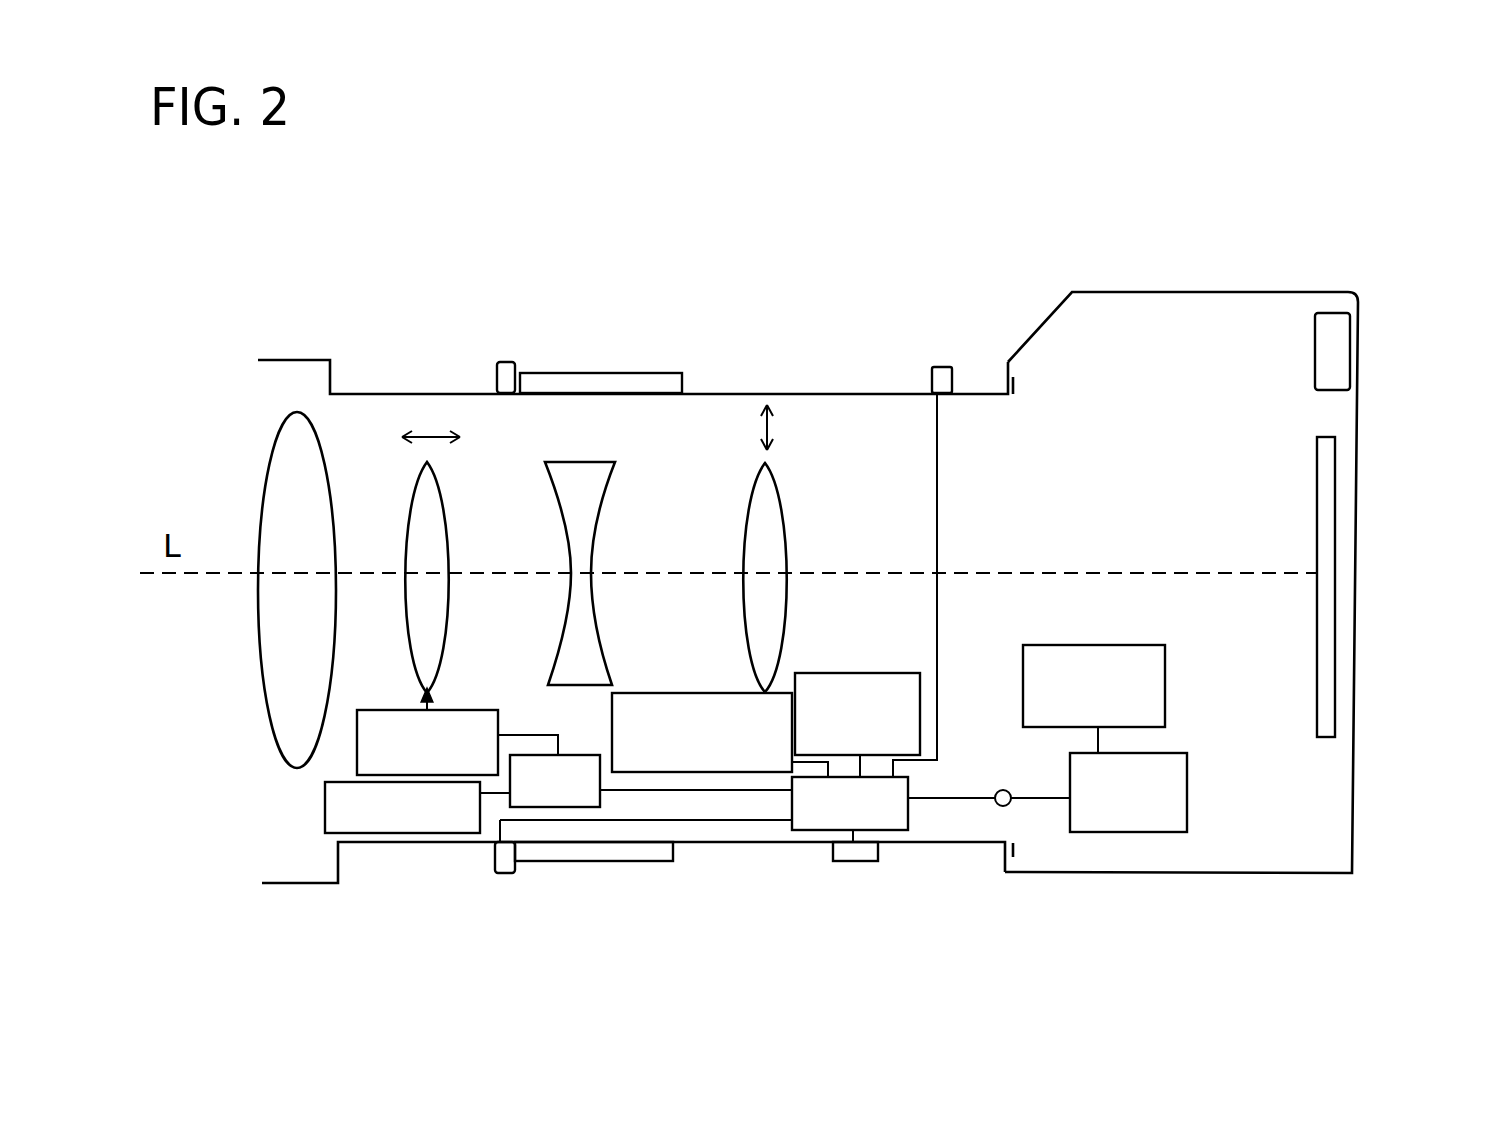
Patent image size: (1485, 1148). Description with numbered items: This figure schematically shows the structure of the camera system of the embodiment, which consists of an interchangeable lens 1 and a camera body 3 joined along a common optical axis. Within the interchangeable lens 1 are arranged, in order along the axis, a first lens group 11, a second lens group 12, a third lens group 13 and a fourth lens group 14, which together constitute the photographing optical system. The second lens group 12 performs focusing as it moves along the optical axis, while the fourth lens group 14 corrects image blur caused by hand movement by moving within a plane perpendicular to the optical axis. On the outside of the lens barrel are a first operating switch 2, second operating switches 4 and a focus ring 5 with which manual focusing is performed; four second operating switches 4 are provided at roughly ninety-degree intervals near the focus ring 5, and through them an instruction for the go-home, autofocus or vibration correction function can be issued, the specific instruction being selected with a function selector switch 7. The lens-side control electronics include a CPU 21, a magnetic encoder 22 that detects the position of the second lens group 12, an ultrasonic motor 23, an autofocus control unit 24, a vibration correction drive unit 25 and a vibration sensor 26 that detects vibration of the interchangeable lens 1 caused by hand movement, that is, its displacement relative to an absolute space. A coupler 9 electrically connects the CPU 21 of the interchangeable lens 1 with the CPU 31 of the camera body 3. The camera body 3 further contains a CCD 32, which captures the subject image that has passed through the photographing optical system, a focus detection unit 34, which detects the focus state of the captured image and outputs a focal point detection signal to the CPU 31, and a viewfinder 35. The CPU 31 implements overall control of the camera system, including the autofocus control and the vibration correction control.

The interchangeable lens 1 is at (363, 388).
The first operating switch 2 is at (943, 372).
The camera body 3 is at (1140, 283).
The second operating switch 4 is at (506, 378).
The focus ring 5 is at (608, 378).
The function selector switch 7 is at (848, 862).
The coupler 9 is at (1008, 805).
The first lens group 11 is at (272, 502).
The second lens group 12 is at (444, 494).
The third lens group 13 is at (593, 498).
The fourth lens group 14 is at (772, 512).
The CPU 21 is at (910, 787).
The magnetic encoder 22 is at (423, 833).
The ultrasonic motor 23 is at (442, 710).
The autofocus (AF) control unit 24 is at (578, 754).
The vibration correction drive unit 25 is at (703, 693).
The vibration sensor 26 is at (848, 672).
The CPU 31 is at (1137, 752).
The CCD 32 is at (1323, 517).
The focus detection unit 34 is at (1138, 645).
The viewfinder 35 is at (1335, 360).